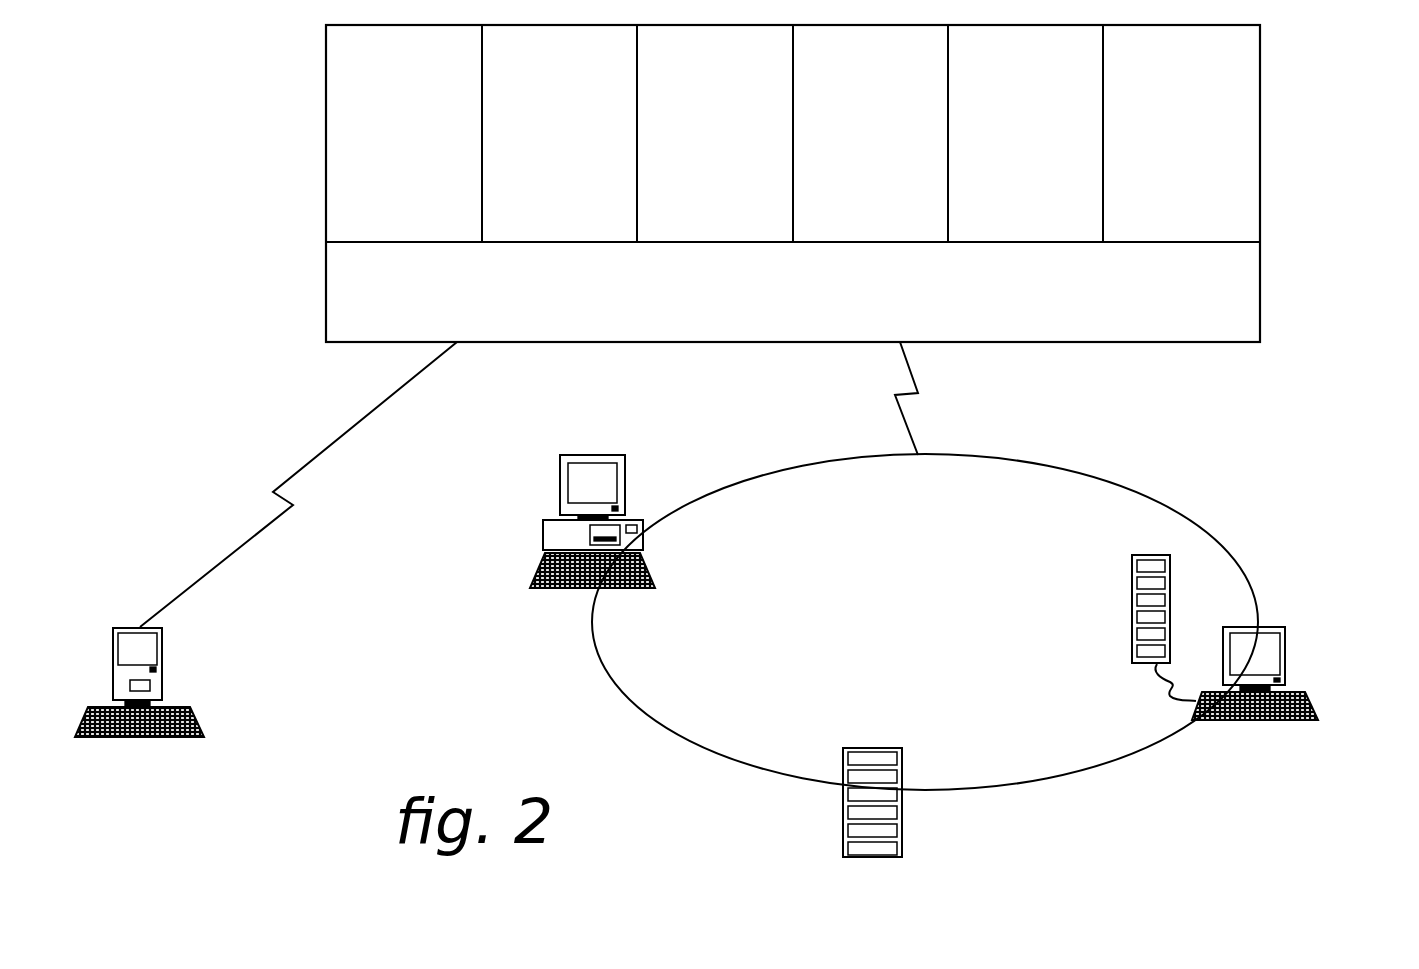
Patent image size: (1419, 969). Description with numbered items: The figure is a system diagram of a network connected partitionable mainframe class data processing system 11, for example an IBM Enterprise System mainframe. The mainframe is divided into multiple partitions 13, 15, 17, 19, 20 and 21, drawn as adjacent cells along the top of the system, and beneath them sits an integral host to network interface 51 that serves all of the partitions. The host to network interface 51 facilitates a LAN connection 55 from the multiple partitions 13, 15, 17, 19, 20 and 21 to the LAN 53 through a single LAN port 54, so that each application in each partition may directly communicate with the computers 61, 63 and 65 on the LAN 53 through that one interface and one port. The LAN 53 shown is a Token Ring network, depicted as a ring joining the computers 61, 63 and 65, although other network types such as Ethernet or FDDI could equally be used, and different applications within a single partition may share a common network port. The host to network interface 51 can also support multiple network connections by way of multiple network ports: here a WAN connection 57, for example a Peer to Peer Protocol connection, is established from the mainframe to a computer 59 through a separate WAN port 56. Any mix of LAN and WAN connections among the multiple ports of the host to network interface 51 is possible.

The partitionable mainframe class data processing system 11 is at (1260, 120).
The partition 13 is at (424, 145).
The partition 15 is at (571, 145).
The partition 17 is at (720, 145).
The partition 19 is at (892, 143).
The partition 20 is at (1042, 143).
The partition 21 is at (1192, 143).
The host to network interface 51 is at (1130, 308).
The LAN 53 is at (1017, 783).
The LAN port 54 is at (905, 345).
The LAN connection 55 is at (893, 417).
The WAN port 56 is at (458, 346).
The WAN connection 57 is at (365, 414).
The computer 59 is at (163, 651).
The computer 61 is at (645, 535).
The computer 63 is at (879, 748).
The computer 65 is at (1288, 655).